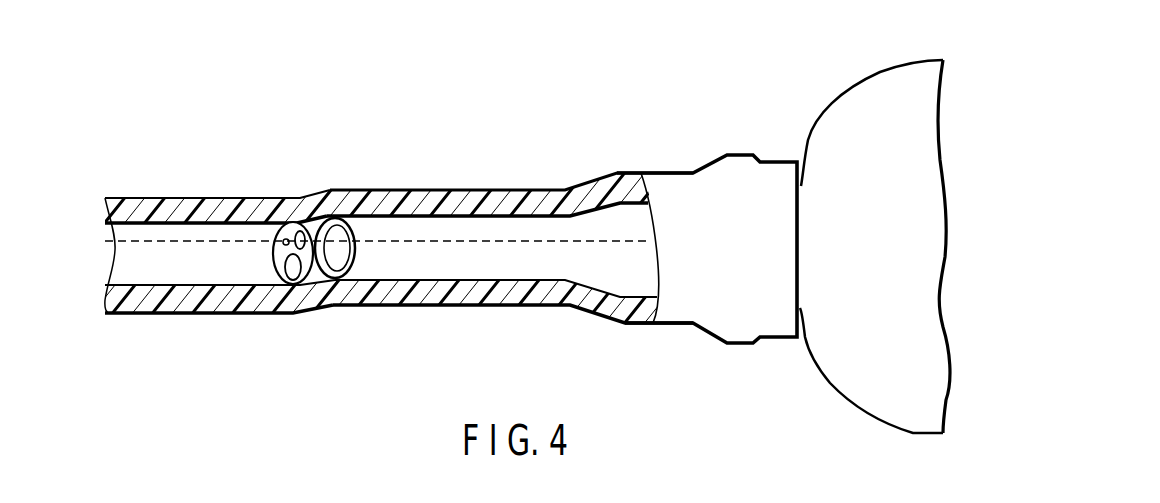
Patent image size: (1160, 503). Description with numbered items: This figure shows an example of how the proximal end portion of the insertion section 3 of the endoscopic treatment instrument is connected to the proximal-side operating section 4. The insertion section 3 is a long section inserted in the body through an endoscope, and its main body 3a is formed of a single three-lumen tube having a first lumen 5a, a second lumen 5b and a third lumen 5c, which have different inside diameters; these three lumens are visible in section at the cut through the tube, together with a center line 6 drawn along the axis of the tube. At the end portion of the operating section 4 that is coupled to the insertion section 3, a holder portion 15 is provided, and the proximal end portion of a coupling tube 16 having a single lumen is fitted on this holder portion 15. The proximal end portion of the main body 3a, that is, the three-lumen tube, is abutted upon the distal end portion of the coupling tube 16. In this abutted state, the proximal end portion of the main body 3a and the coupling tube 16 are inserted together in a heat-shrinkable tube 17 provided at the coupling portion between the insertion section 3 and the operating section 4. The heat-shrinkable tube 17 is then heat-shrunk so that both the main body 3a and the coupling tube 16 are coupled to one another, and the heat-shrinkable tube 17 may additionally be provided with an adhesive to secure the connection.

The insertion section 3 is at (445, 267).
The main body 3a is at (204, 280).
The operating section 4 is at (862, 270).
The first lumen 5a is at (286, 237).
The second lumen 5b is at (293, 280).
The third lumen 5c is at (334, 216).
The central axis 6 is at (203, 238).
The holder portion 15 is at (899, 421).
The coupling tube 16 is at (402, 229).
The heat-shrinkable tube 17 is at (487, 292).